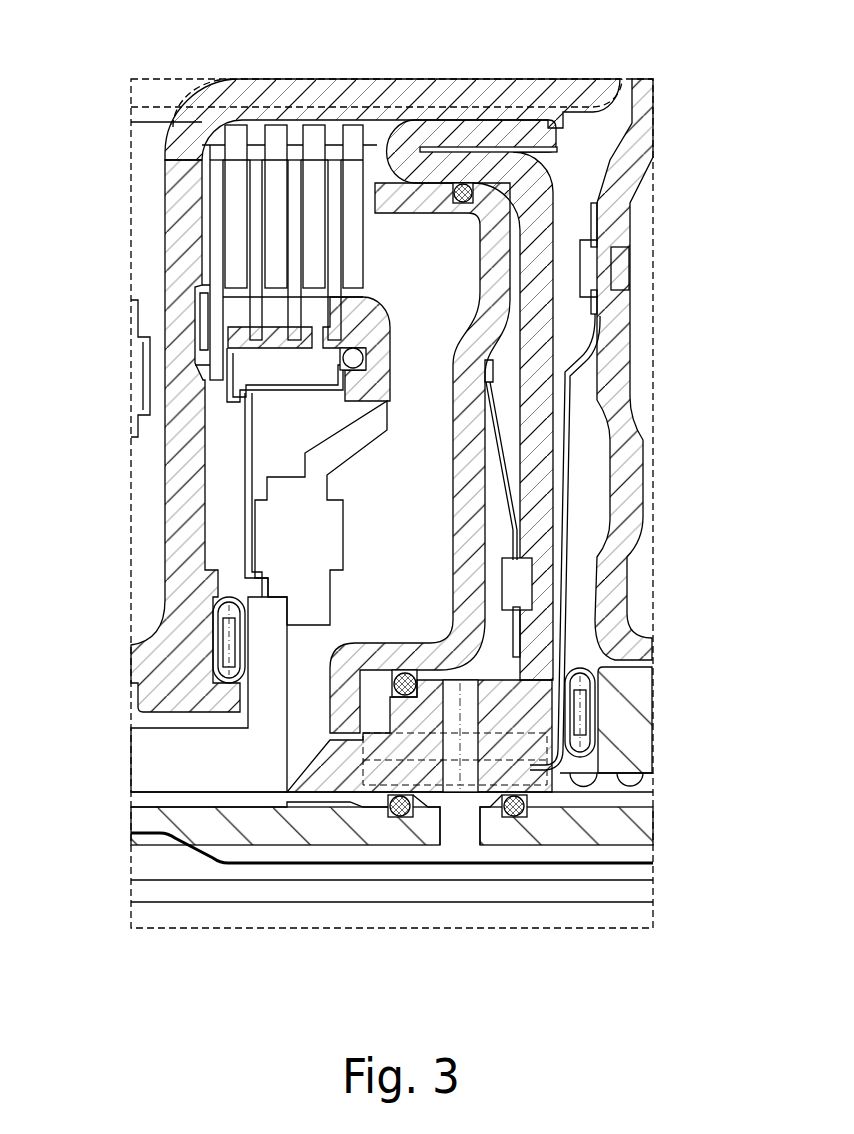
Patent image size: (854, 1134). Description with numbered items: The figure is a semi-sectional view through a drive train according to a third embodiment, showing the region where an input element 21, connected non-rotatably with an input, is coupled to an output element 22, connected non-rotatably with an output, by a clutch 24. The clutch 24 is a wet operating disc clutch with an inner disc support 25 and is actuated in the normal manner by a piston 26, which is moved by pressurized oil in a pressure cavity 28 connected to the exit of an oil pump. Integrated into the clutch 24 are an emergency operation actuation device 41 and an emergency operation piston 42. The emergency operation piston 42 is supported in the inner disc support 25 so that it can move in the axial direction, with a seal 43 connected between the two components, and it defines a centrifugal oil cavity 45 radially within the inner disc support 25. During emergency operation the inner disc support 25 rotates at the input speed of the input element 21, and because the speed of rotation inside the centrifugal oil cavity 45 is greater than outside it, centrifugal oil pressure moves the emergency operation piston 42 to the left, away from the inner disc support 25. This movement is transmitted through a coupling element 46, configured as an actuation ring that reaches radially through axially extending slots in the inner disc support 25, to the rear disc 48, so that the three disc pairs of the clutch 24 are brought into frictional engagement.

The input element 21 is at (152, 764).
The output element 22 is at (476, 97).
The clutch 24 is at (456, 254).
The inner disc support 25 is at (328, 542).
The piston 26 is at (500, 328).
The pressure cavity 28 is at (500, 658).
The emergency operation actuation device 41 is at (224, 497).
The emergency operation piston 42 is at (258, 455).
The seal 43 is at (382, 376).
The centrifugal oil cavity 45 is at (267, 424).
The coupling element 46 is at (270, 370).
The rear disc 48 is at (292, 162).